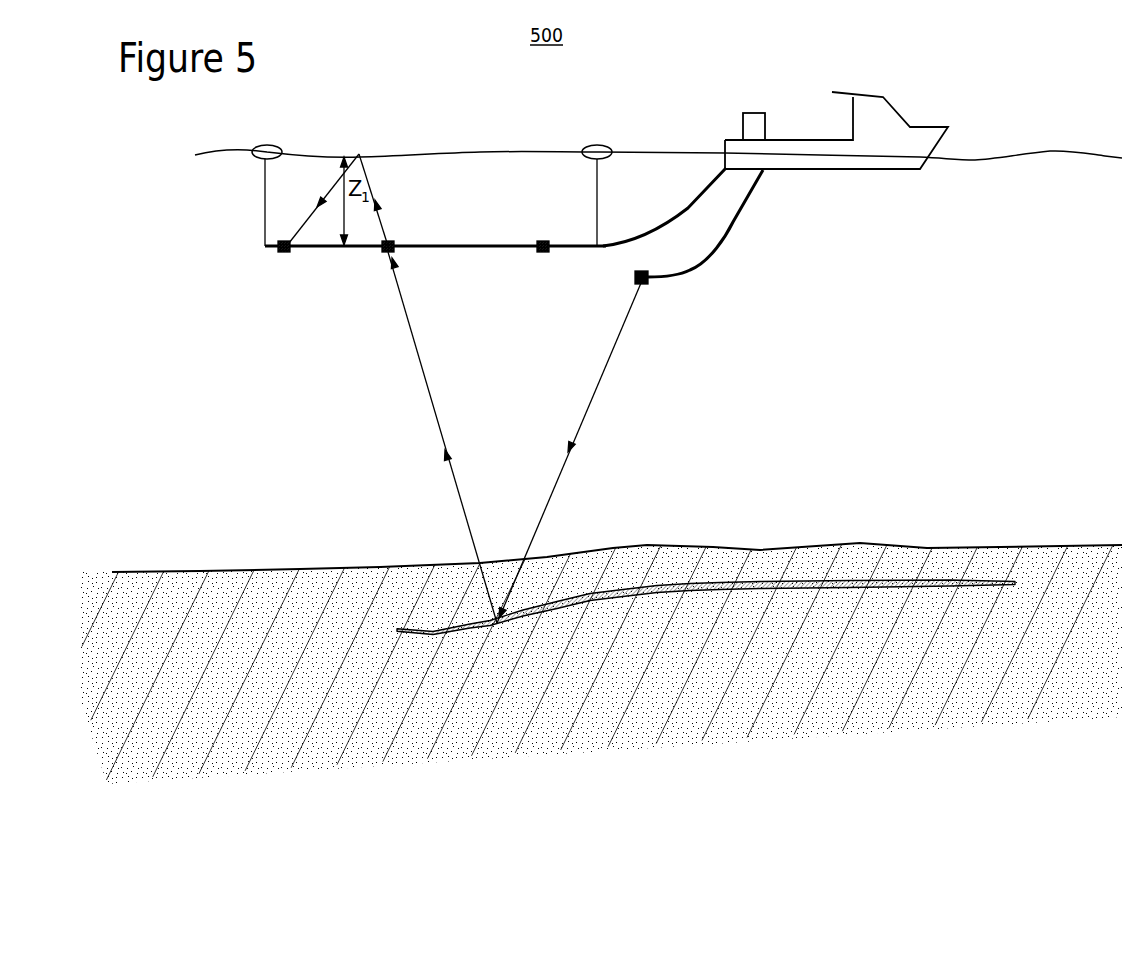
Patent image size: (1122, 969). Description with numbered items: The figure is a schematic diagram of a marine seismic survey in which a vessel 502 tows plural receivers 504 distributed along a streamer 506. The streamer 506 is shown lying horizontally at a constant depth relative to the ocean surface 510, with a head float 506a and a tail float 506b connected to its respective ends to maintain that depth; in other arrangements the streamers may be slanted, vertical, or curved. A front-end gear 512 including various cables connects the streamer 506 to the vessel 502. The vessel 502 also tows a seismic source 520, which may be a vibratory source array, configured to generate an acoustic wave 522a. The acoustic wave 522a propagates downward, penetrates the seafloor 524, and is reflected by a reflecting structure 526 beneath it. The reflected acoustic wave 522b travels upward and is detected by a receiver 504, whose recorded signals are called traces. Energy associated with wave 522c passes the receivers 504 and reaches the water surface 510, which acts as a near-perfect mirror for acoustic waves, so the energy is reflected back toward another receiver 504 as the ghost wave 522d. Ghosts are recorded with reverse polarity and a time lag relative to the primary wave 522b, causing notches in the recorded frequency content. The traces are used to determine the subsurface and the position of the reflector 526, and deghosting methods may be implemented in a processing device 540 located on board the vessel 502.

The vessel 502 is at (898, 74).
The receivers 504 is at (284, 253).
The streamer 506 is at (433, 243).
The head float 506a is at (588, 144).
The tail float 506b is at (258, 143).
The ocean surface 510 is at (1007, 157).
The front-end gear 512 is at (689, 216).
The seismic source 520 is at (645, 283).
The acoustic wave 522a is at (590, 398).
The reflected acoustic wave 522b is at (430, 398).
The wave passing the receivers 522c is at (382, 215).
The ghost wave 522d is at (331, 185).
The seafloor 524 is at (800, 548).
The reflecting structure 526 is at (686, 586).
The processing device 540 is at (755, 113).